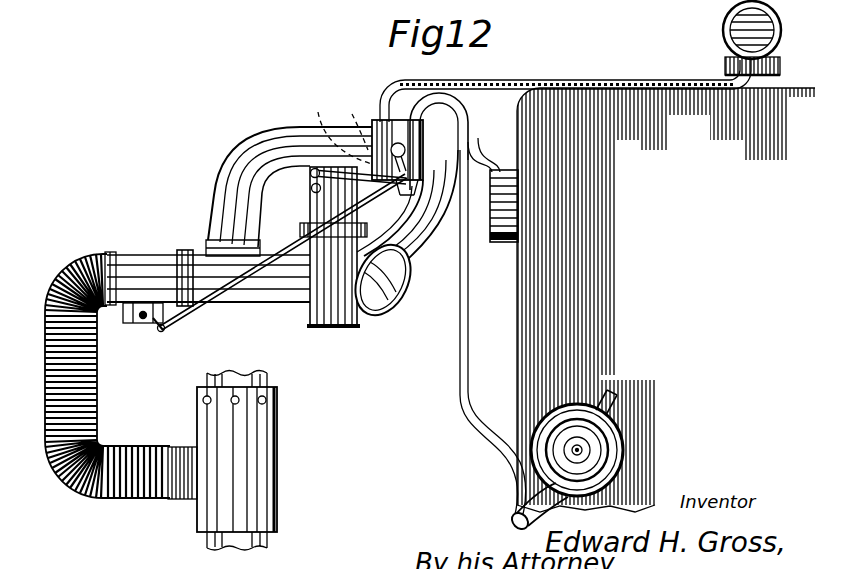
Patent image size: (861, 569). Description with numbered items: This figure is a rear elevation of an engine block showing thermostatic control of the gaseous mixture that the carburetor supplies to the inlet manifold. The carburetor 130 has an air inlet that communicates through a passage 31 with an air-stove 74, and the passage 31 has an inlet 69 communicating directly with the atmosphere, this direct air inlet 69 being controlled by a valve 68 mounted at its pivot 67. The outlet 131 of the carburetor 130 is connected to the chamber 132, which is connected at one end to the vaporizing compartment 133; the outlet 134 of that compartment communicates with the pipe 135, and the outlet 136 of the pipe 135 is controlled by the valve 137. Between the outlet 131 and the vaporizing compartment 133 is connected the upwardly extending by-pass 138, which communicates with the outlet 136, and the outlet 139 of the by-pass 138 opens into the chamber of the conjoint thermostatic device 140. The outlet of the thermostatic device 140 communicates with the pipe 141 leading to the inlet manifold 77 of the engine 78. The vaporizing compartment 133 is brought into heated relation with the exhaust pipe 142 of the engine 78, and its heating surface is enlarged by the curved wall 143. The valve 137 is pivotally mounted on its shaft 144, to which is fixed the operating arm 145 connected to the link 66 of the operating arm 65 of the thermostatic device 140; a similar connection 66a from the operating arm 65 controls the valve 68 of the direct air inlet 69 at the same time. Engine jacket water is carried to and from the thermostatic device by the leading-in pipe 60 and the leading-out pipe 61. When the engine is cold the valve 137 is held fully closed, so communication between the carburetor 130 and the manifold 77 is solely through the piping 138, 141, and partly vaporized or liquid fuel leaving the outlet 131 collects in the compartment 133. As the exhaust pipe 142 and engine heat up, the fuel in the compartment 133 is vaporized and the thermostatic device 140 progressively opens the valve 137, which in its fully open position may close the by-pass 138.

The passage 31 is at (98, 395).
The leading-in pipe 60 is at (496, 86).
The leading-out pipe 61 is at (470, 340).
The operating arm 65 is at (468, 128).
The link 66 is at (352, 204).
The connection 66a is at (164, 327).
The pivot 67 is at (158, 334).
The valve 68 is at (143, 320).
The inlet 69 is at (125, 314).
The air-stove 74 is at (252, 470).
The inlet manifold 77 is at (505, 172).
The engine 78 is at (666, 300).
The carburetor 130 is at (156, 262).
The outlet of the carburetor 131 is at (182, 307).
The chamber 132 is at (250, 302).
The vaporizing compartment 133 is at (330, 328).
The outlet of the vaporizing compartment 134 is at (405, 180).
The pipe 135 is at (306, 228).
The outlet of the pipe 136 is at (347, 121).
The valve 137 is at (326, 128).
The by-pass 138 is at (222, 196).
The outlet of the by-pass 139 is at (384, 118).
The conjoint thermostatic device 140 is at (395, 133).
The pipe 141 is at (455, 140).
The exhaust pipe 142 is at (444, 256).
The curved wall 143 is at (358, 244).
The shaft 144 is at (290, 152).
The operating arm 145 is at (311, 203).